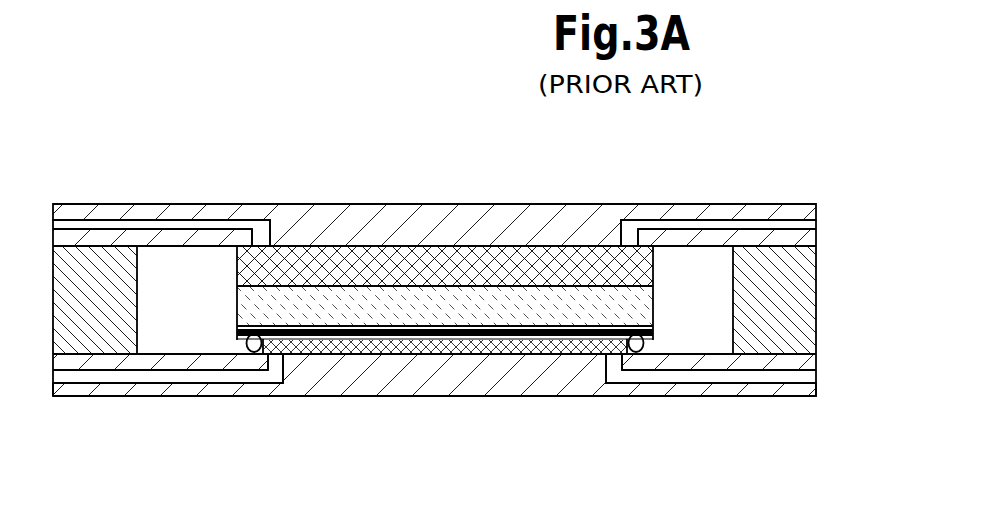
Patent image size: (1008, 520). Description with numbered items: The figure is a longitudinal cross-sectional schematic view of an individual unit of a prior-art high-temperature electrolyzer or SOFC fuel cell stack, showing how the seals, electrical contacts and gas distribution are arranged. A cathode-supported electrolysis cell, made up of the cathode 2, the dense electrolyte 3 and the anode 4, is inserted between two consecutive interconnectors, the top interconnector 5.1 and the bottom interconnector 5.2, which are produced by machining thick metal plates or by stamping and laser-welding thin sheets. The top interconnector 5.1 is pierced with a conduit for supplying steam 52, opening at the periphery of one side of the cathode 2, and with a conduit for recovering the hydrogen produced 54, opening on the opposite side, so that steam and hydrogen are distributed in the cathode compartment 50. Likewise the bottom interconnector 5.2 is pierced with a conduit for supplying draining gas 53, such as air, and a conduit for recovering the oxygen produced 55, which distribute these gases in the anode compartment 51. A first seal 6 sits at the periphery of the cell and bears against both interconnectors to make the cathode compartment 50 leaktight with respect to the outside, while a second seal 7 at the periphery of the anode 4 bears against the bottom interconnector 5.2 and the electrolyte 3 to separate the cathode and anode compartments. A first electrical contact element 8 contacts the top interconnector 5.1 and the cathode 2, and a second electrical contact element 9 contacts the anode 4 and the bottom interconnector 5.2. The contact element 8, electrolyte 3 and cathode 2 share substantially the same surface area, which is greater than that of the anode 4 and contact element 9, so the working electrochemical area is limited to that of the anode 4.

The cathode 2 is at (665, 303).
The electrolyte 3 is at (665, 332).
The anode 4 is at (653, 348).
The top interconnector 5.1 is at (485, 218).
The bottom interconnector 5.2 is at (413, 378).
The first seal 6 is at (109, 301).
The second seal 7 is at (234, 343).
The first electrical contact element 8 is at (574, 236).
The second electrical contact element 9 is at (364, 363).
The cathode compartment 50 is at (188, 262).
The anode compartment 51 is at (472, 362).
The conduit for supplying steam 52 is at (257, 207).
The conduit for supplying draining gas 53 is at (276, 372).
The conduit for recovering the hydrogen produced 54 is at (633, 208).
The conduit for recovering the oxygen produced 55 is at (616, 376).